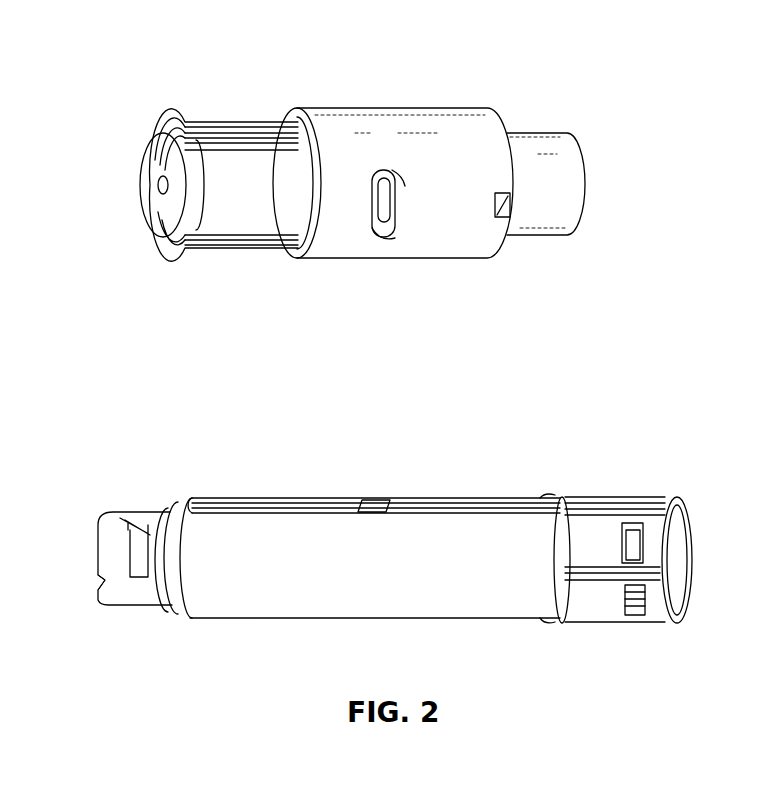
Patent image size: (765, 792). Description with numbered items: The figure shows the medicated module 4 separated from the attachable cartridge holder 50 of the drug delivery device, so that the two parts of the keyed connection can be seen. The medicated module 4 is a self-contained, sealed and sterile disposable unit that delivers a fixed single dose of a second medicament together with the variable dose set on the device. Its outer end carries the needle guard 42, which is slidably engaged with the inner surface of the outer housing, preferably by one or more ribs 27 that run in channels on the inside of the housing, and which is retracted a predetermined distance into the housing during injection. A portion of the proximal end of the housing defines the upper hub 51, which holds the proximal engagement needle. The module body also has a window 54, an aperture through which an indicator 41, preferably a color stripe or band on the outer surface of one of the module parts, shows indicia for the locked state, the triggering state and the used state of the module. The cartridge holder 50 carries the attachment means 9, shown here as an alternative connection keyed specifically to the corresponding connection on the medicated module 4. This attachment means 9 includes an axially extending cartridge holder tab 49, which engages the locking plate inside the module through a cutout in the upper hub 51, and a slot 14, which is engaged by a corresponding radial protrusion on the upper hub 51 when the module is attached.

The medicated module 4 is at (513, 62).
The ribs 27 is at (205, 127).
The needle guard 42 is at (223, 227).
The indicator 41 is at (393, 202).
The window 54 is at (380, 232).
The upper hub 51 is at (563, 183).
The cartridge holder 50 is at (333, 568).
The attachment means 9 is at (112, 552).
The slot 14 is at (140, 530).
The cartridge holder tab 49 is at (103, 596).